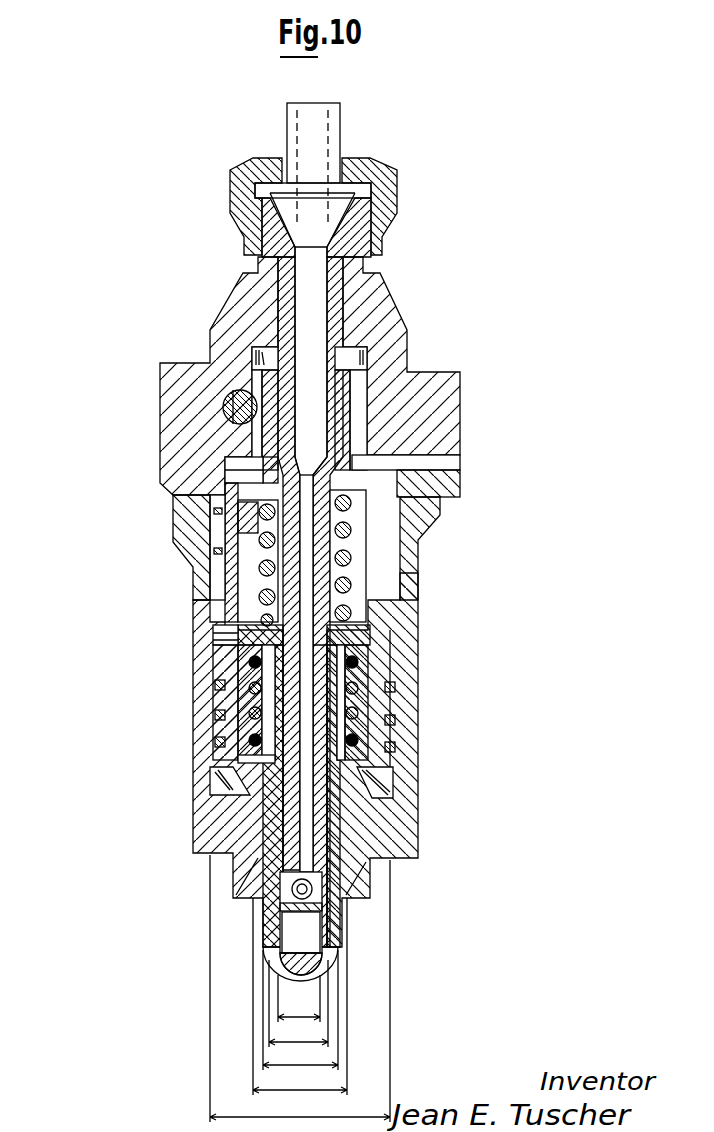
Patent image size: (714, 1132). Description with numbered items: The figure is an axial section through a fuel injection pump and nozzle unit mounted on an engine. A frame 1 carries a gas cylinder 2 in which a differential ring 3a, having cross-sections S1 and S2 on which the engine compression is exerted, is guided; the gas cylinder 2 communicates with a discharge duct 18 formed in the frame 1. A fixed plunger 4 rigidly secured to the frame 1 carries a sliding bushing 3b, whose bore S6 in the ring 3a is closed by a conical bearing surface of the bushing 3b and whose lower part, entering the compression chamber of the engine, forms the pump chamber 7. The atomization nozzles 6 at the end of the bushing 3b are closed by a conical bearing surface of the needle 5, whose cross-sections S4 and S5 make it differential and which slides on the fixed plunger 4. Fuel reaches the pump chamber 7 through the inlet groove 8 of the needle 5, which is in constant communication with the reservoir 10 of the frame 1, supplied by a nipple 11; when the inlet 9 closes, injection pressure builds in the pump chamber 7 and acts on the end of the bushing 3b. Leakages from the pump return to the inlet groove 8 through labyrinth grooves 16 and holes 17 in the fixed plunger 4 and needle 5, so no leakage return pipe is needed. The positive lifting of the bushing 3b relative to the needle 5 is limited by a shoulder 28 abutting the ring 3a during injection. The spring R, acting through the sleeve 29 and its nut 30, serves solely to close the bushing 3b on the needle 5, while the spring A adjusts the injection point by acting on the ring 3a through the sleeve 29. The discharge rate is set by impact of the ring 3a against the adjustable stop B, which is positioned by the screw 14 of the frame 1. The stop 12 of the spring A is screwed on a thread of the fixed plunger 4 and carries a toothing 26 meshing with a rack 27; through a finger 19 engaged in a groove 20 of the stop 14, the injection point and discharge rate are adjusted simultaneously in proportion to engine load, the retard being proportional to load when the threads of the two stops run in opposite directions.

The frame 1 is at (215, 380).
The gas cylinder 2 is at (225, 583).
The differential ring 3a is at (258, 658).
The bushing 3b is at (388, 735).
The fixed plunger 4 is at (268, 325).
The needle 5 is at (345, 850).
The atomization nozzles 6 is at (283, 948).
The pump chamber 7 is at (310, 925).
The inlet groove 8 is at (300, 833).
The inlet 9 is at (297, 890).
The reservoir 10 is at (310, 322).
The nipple 11 is at (316, 141).
The stop of the spring A 12 is at (343, 440).
The screw 14 is at (405, 533).
The labyrinth grooves 16 is at (355, 658).
The holes 17 is at (245, 637).
The discharge duct 18 is at (405, 465).
The finger 19 is at (222, 522).
The groove 20 is at (248, 470).
The toothing 26 is at (357, 391).
The rack 27 is at (228, 422).
The shoulder 28 is at (215, 780).
The sleeve 29 is at (243, 758).
The nut 30 is at (385, 755).
The spring A is at (350, 590).
The adjustable stop B is at (405, 630).
The spring R is at (263, 707).
The cross-section S1 is at (300, 996).
The cross-section S2 is at (300, 988).
The cross-section S4 is at (299, 998).
The bearing surface cross-section S5 is at (298, 1003).
The bore S6 is at (300, 1010).